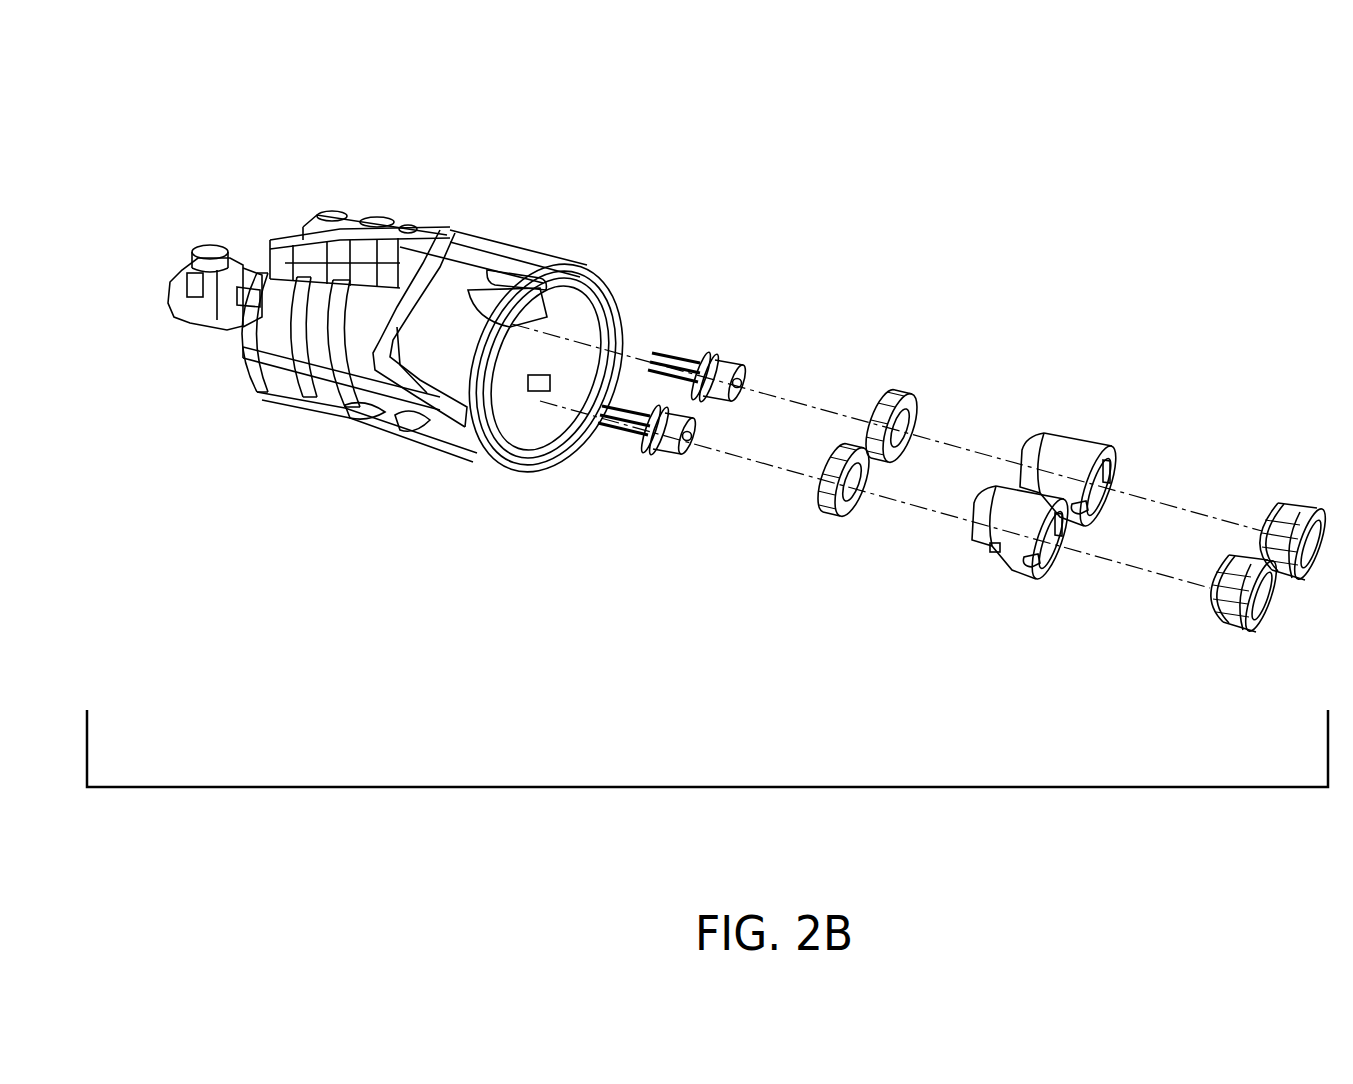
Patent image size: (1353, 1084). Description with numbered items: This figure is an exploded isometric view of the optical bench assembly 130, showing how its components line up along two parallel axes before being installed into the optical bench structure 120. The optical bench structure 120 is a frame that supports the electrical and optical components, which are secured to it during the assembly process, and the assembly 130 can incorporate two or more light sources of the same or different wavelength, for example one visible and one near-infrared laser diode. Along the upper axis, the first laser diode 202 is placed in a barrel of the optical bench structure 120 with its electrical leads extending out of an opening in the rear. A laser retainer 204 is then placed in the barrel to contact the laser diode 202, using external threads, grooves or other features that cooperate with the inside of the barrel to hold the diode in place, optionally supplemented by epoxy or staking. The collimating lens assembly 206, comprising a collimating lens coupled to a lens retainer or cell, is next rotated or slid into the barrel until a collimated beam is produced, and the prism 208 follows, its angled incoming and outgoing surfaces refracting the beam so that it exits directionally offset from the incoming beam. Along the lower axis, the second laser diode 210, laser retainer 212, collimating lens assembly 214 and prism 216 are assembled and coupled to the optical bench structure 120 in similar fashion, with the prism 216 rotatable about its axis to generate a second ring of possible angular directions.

The optical bench structure 120 is at (447, 232).
The optical bench assembly 130 is at (371, 787).
The first laser diode 202 is at (730, 362).
The laser retainer 204 is at (905, 398).
The collimating lens assembly 206 is at (1083, 433).
The prism 208 is at (1285, 502).
The laser diode 210 is at (665, 452).
The laser retainer 212 is at (822, 512).
The collimating lens assembly 214 is at (1005, 570).
The prism 216 is at (1225, 630).